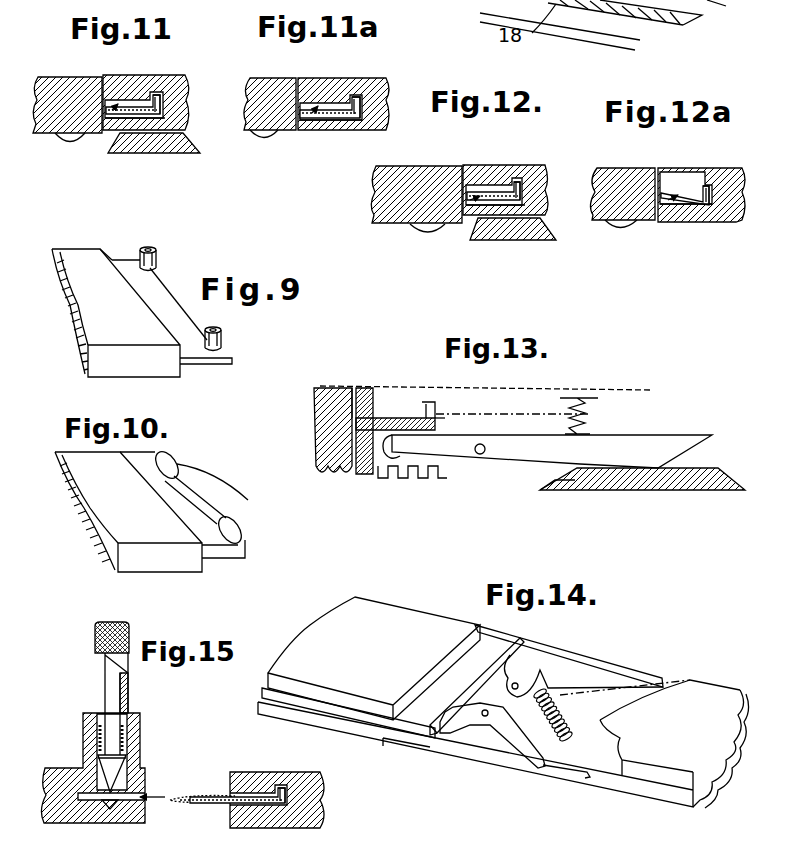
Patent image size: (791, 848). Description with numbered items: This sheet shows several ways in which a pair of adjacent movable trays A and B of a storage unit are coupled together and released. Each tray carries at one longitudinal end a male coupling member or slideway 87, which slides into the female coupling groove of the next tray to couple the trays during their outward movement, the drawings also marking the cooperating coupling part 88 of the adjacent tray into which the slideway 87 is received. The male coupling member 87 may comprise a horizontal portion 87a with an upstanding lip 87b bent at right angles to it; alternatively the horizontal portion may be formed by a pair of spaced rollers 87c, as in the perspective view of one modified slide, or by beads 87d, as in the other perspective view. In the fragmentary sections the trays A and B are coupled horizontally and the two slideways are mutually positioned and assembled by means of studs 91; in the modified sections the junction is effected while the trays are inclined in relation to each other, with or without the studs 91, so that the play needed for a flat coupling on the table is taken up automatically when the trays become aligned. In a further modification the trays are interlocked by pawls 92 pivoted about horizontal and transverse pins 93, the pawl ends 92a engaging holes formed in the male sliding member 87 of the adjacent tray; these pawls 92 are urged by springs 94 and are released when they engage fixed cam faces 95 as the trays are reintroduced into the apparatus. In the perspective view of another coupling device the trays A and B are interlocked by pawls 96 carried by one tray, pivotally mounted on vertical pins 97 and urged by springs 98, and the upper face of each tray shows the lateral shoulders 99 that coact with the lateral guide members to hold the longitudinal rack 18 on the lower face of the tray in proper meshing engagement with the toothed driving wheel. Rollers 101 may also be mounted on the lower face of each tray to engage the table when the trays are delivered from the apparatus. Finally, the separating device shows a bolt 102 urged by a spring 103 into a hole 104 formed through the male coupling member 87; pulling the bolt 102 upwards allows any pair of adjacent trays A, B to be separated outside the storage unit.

In FIG. 13, the longitudinal rack 18 is at (342, 478).
In FIG. 11, the male coupling member 87 is at (112, 103).
In FIG. 11A, the male coupling member 87 is at (320, 108).
In FIG. 12, the male coupling member 87 is at (469, 220).
In FIG. 12A, the male coupling member 87 is at (666, 190).
In FIG. 9, the male coupling member 87 is at (210, 361).
In FIG. 10, the male coupling member 87 is at (212, 560).
In FIG. 13, the male coupling member 87 is at (356, 386).
In FIG. 15, the male coupling member 87 is at (263, 790).
In FIG. 14, the male coupling member 87 is at (465, 688).
In FIG. 11, the horizontal portion 87a is at (165, 125).
In FIG. 11A, the horizontal portion 87a is at (327, 122).
In FIG. 12, the horizontal portion 87a is at (520, 222).
In FIG. 12A, the horizontal portion 87a is at (663, 206).
In FIG. 13, the horizontal portion 87a is at (380, 416).
In FIG. 15, the horizontal portion 87a is at (226, 795).
In FIG. 11, the upstanding lip 87b is at (163, 104).
In FIG. 11A, the upstanding lip 87b is at (366, 118).
In FIG. 12, the upstanding lip 87b is at (549, 212).
In FIG. 12A, the upstanding lip 87b is at (706, 206).
In FIG. 13, the upstanding lip 87b is at (437, 420).
In FIG. 15, the upstanding lip 87b is at (326, 790).
In FIG. 9, the spaced rollers 87c is at (205, 333).
In FIG. 10, the beads 87d is at (240, 530).
In FIG. 11, the hook slot 88 is at (158, 97).
In FIG. 11A, the hook slot 88 is at (357, 96).
In FIG. 12, the hook slot 88 is at (515, 182).
In FIG. 12A, the hook slot 88 is at (710, 190).
In FIG. 13, the hook slot 88 is at (430, 402).
In FIG. 15, the hook slot 88 is at (284, 789).
In FIG. 11, the studs 91 is at (113, 115).
In FIG. 11A, the studs 91 is at (313, 116).
In FIG. 12, the studs 91 is at (472, 190).
In FIG. 12A, the studs 91 is at (690, 185).
In FIG. 13, the pawls 92 is at (524, 462).
In FIG. 13, the pawl ends 92a is at (393, 462).
In FIG. 13, the horizontal transverse pins 93 is at (480, 455).
In FIG. 13, the springs 94 is at (588, 414).
In FIG. 11, the fixed cam faces 95 is at (136, 152).
In FIG. 12, the fixed cam faces 95 is at (500, 240).
In FIG. 13, the fixed cam faces 95 is at (612, 480).
In FIG. 14, the pawls 96 is at (560, 730).
In FIG. 14, the vertical pins 97 is at (544, 664).
In FIG. 14, the springs 98 is at (528, 740).
In FIG. 14, the lateral shoulders 99 is at (322, 706).
In FIG. 11, the rollers 101 is at (62, 140).
In FIG. 11A, the rollers 101 is at (265, 140).
In FIG. 12, the rollers 101 is at (418, 232).
In FIG. 12A, the rollers 101 is at (626, 234).
In FIG. 15, the bolt 102 is at (114, 770).
In FIG. 15, the spring 103 is at (122, 735).
In FIG. 15, the hole 104 is at (190, 803).
In FIG. 11, the tray A is at (184, 74).
In FIG. 11A, the tray A is at (390, 78).
In FIG. 12, the tray A is at (553, 168).
In FIG. 12A, the tray A is at (738, 222).
In FIG. 13, the tray A is at (644, 410).
In FIG. 15, the tray A is at (328, 796).
In FIG. 14, the tray A is at (712, 682).
In FIG. 11, the tray B is at (52, 73).
In FIG. 11A, the tray B is at (272, 76).
In FIG. 12, the tray B is at (416, 194).
In FIG. 12A, the tray B is at (611, 166).
In FIG. 9, the tray B is at (72, 318).
In FIG. 10, the tray B is at (82, 530).
In FIG. 13, the tray B is at (313, 410).
In FIG. 15, the tray B is at (58, 764).
In FIG. 14, the tray B is at (405, 614).